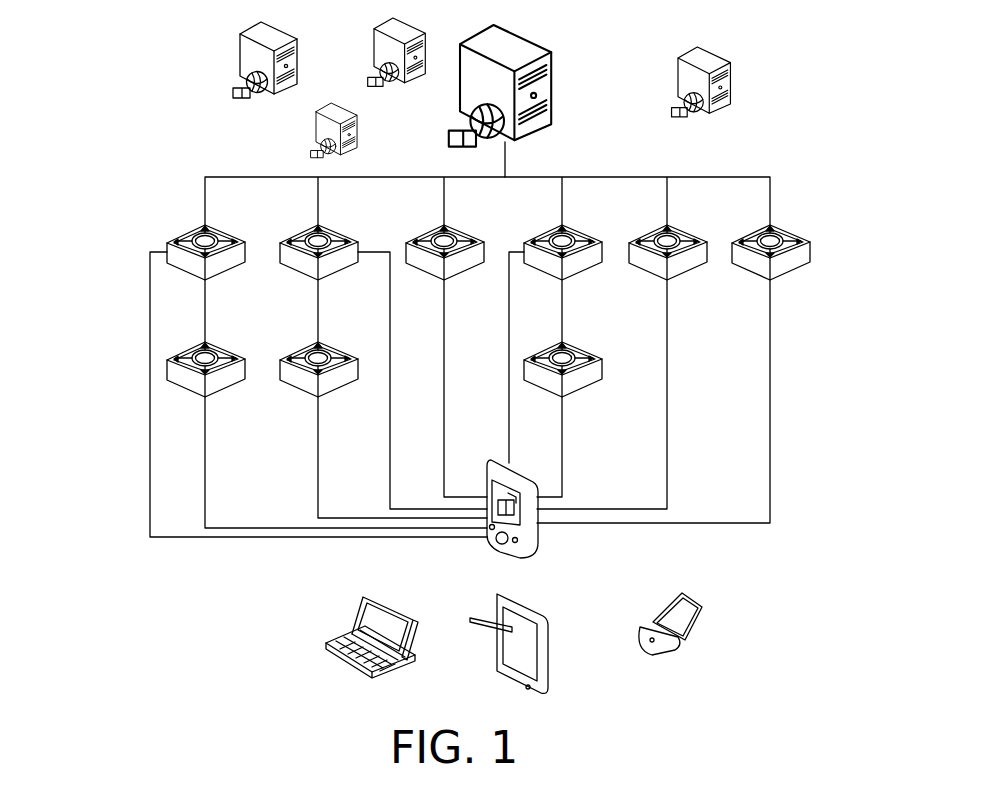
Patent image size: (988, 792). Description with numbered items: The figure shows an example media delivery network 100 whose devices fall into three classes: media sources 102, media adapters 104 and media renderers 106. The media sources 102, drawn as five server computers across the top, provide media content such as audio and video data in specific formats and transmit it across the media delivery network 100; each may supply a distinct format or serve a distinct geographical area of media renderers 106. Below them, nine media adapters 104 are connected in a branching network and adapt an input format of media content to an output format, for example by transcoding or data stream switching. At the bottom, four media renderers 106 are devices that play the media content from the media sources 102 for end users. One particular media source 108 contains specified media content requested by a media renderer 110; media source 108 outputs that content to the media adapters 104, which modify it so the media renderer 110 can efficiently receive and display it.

The media delivery network 100 is at (796, 62).
The media sources 102 is at (100, 23).
The media adapters 104 is at (100, 185).
The media renderers 106 is at (100, 462).
The media source 108 is at (553, 122).
The mobile device 110 is at (537, 545).